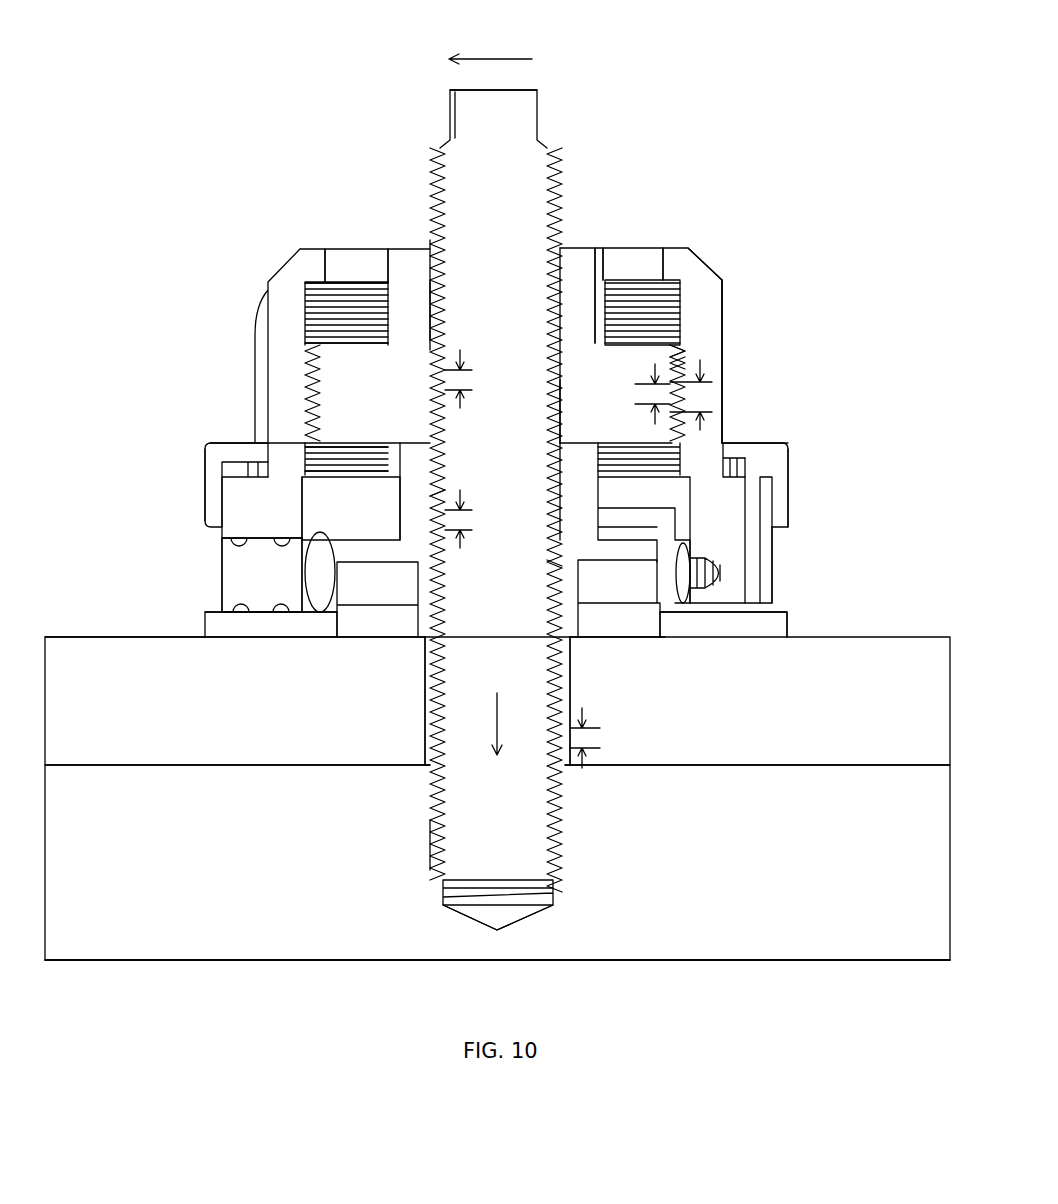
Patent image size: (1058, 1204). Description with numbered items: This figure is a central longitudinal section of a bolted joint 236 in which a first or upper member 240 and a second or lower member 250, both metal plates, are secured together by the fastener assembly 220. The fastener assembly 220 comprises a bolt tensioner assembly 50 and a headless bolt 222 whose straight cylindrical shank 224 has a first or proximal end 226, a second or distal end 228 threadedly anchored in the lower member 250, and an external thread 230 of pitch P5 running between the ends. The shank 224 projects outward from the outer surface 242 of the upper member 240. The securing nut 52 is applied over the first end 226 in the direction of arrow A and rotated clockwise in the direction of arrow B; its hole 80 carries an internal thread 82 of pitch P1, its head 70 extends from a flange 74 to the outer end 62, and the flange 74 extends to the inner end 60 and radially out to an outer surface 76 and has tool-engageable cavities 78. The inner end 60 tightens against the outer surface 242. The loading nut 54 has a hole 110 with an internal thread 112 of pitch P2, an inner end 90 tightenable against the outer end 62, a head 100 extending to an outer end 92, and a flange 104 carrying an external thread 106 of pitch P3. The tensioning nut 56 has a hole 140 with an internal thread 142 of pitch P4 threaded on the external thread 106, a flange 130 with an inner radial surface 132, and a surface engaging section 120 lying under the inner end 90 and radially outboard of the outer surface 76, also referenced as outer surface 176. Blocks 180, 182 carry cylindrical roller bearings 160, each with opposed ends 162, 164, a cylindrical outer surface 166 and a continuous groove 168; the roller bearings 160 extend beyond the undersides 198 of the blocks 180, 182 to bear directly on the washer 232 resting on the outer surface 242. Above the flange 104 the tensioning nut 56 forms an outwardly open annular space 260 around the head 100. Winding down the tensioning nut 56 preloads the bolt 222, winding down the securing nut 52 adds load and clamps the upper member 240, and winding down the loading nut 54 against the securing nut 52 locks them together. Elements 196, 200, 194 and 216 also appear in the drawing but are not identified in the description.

The fastener assembly 220 is at (736, 91).
The bolt 222 is at (571, 162).
The shank 224 is at (548, 855).
The first end 226 is at (538, 90).
The second end 228 is at (470, 905).
The external thread 230 is at (438, 858).
The upper member 240 is at (905, 660).
The outer surface 242 is at (80, 637).
The lower member 250 is at (835, 945).
The bolted joint 236 is at (275, 972).
The securing nut 52 is at (379, 661).
The flange 74 is at (394, 657).
The inner end 60 is at (625, 642).
The outer surface 76 is at (625, 640).
The loading nut 54 is at (600, 239).
The tensioning nut 56 is at (734, 274).
The outer end 92 is at (574, 244).
The head 100 is at (598, 272).
The annular space 260 is at (652, 276).
The internal thread 142 is at (323, 445).
The hole 140 is at (363, 385).
The internal thread 112 is at (467, 306).
The hole 110 is at (485, 302).
The flange 104 is at (680, 372).
The external thread 106 is at (690, 395).
The flange 130 is at (745, 462).
The outer end 62 is at (580, 440).
The inner end 90 is at (577, 491).
The head 70 is at (415, 455).
The inner radial surface 132 is at (360, 470).
The internal thread 82 is at (448, 498).
The hole 80 is at (505, 575).
The pitch P1 is at (462, 538).
The pitch P2 is at (462, 398).
The pitch P3 is at (712, 388).
The pitch P4 is at (650, 414).
The pitch P5 is at (585, 770).
The arrow A is at (510, 752).
The arrow B is at (488, 58).
The block 180 is at (238, 495).
The flange outer wall 196 is at (222, 495).
The seal body 200 is at (232, 555).
The opposed end 164 is at (215, 570).
The roller bearings 160 is at (215, 595).
The insert body 194 is at (305, 535).
The opposed end 162 is at (322, 640).
The cavities 78 is at (396, 596).
The cylindrical outer surface 166 is at (265, 640).
The continuous groove 168 is at (245, 635).
The washer 232 is at (780, 640).
The surface engaging section 120 is at (706, 600).
The undersides 198 is at (765, 620).
The block 182 is at (742, 486).
The outer surface 176 is at (735, 498).
The flange outer edge 216 is at (785, 462).
The bolt tensioner assembly 50 is at (796, 414).